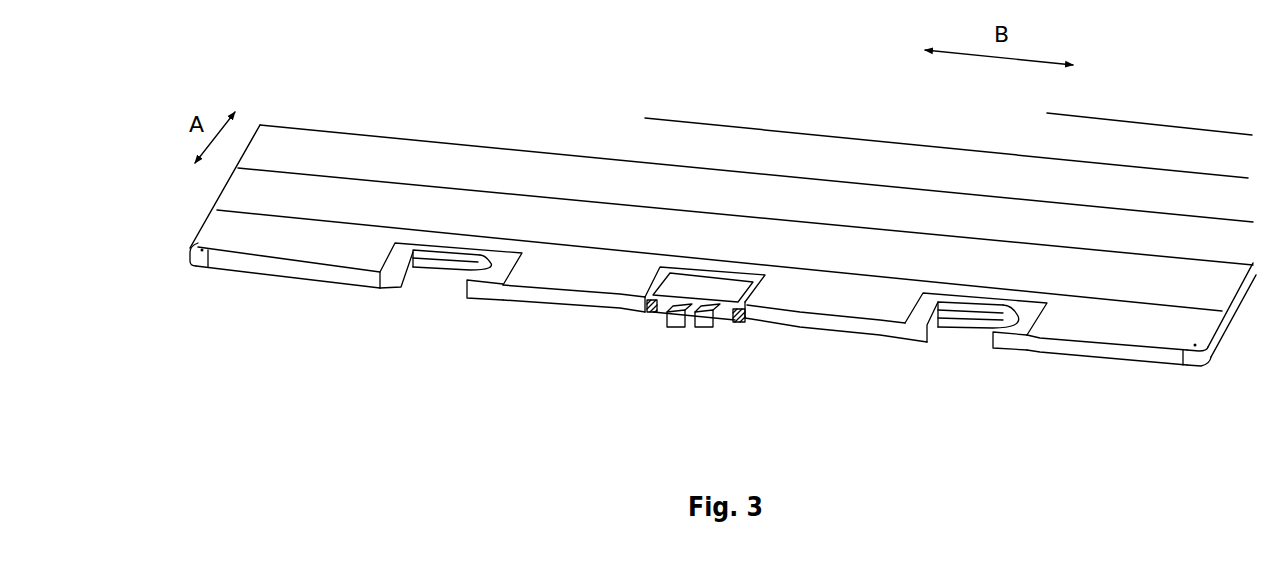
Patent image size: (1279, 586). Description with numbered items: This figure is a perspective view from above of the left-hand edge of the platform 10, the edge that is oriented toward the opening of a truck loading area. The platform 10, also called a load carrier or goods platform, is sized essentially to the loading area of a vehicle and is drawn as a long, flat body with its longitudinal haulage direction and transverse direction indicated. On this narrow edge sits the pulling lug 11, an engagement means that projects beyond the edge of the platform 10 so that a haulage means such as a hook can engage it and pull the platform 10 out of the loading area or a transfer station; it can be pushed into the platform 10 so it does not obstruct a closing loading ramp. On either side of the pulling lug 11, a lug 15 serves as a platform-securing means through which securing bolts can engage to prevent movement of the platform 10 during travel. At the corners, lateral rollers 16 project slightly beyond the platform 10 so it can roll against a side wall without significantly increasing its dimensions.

The platform 10 is at (660, 187).
The pulling lug 11 is at (692, 333).
The lug 15 is at (440, 285).
The lateral rollers 16 is at (199, 271).